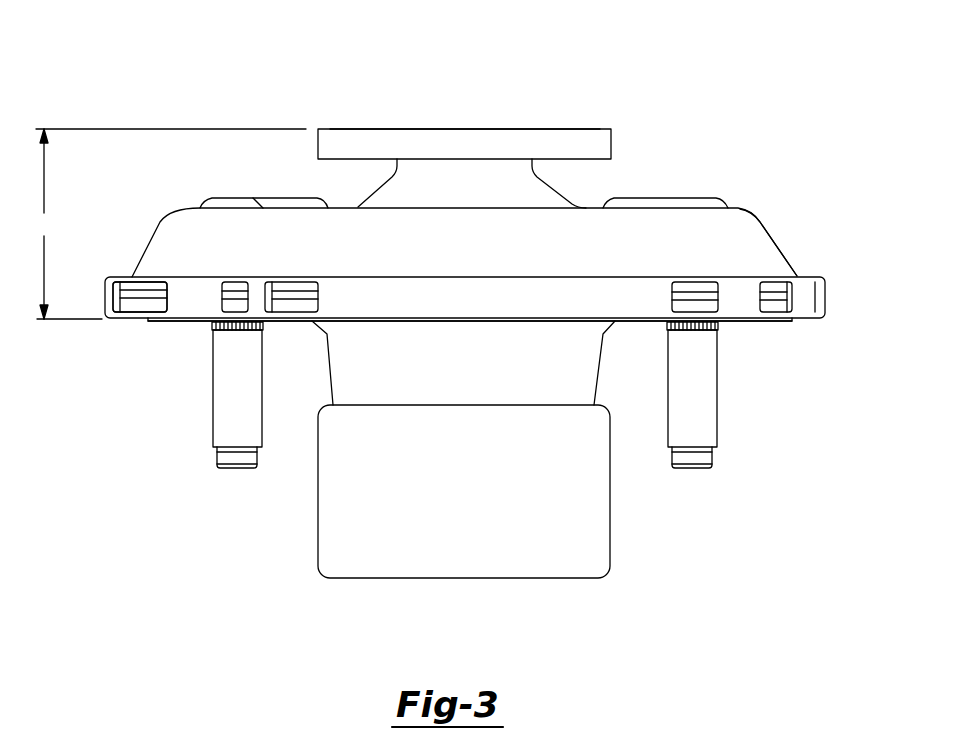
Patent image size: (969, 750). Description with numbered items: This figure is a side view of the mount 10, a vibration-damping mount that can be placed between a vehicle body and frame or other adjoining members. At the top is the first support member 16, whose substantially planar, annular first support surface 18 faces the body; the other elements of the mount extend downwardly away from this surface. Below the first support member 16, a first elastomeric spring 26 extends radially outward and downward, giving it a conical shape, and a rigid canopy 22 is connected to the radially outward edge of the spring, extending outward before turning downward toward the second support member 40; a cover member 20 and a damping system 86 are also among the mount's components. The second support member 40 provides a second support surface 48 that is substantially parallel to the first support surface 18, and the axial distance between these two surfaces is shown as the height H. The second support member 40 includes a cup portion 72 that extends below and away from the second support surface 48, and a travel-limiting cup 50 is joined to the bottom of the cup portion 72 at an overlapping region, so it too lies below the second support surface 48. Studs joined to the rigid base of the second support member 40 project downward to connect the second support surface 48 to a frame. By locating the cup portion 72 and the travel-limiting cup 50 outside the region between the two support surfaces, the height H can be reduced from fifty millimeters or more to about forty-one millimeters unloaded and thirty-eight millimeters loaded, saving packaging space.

The mount 10 is at (250, 60).
The first support member 16 is at (588, 141).
The first support surface 18 is at (514, 128).
The cover member 20 is at (181, 226).
The rigid canopy 22 is at (750, 243).
The first elastomeric spring 26 is at (540, 191).
The second support member 40 is at (138, 307).
The second support surface 48 is at (188, 323).
The travel-limiting cup 50 is at (325, 548).
The cup portion 72 is at (365, 380).
The damping system 86 is at (832, 248).
The height H is at (171, 224).